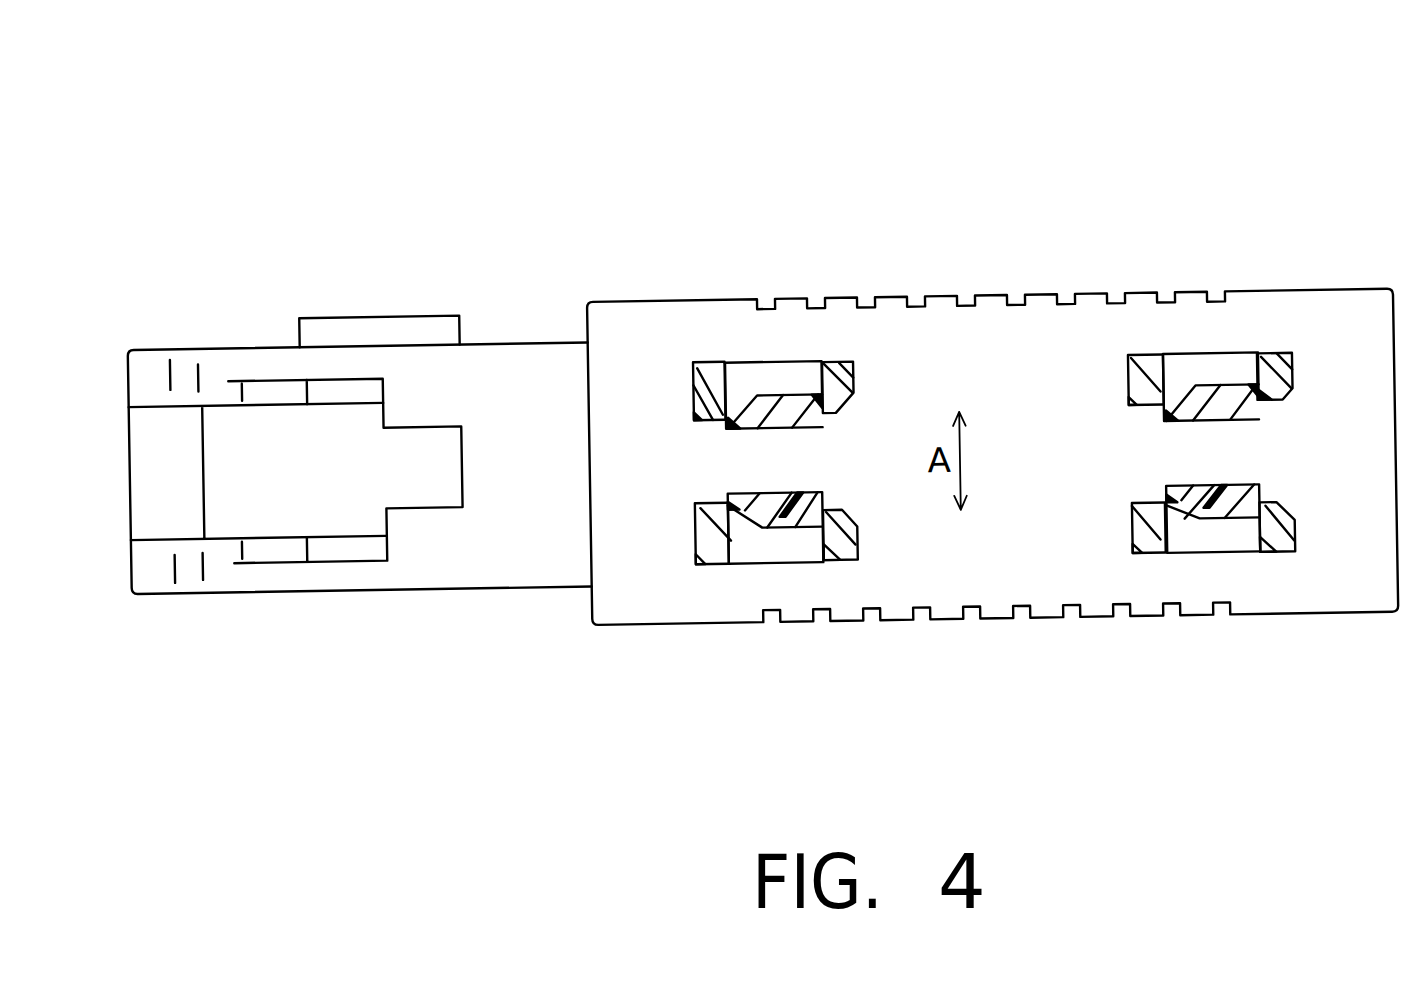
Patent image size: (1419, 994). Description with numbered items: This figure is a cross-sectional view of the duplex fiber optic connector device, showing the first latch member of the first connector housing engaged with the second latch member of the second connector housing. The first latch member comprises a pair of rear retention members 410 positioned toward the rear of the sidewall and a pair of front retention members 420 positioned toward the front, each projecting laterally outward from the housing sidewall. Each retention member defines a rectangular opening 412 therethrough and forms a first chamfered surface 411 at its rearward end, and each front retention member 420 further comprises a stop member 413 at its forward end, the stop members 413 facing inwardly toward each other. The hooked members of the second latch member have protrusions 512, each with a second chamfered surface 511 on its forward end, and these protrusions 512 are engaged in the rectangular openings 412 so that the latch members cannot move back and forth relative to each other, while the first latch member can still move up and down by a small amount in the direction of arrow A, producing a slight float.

The rear retention member 410 is at (1354, 179).
The front retention member 420 is at (895, 180).
The first chamfered surface 411 is at (851, 403).
The rectangular opening 412 is at (782, 381).
The stop member 413 is at (692, 382).
The second chamfered surface 511 is at (748, 518).
The protrusion 512 is at (791, 512).